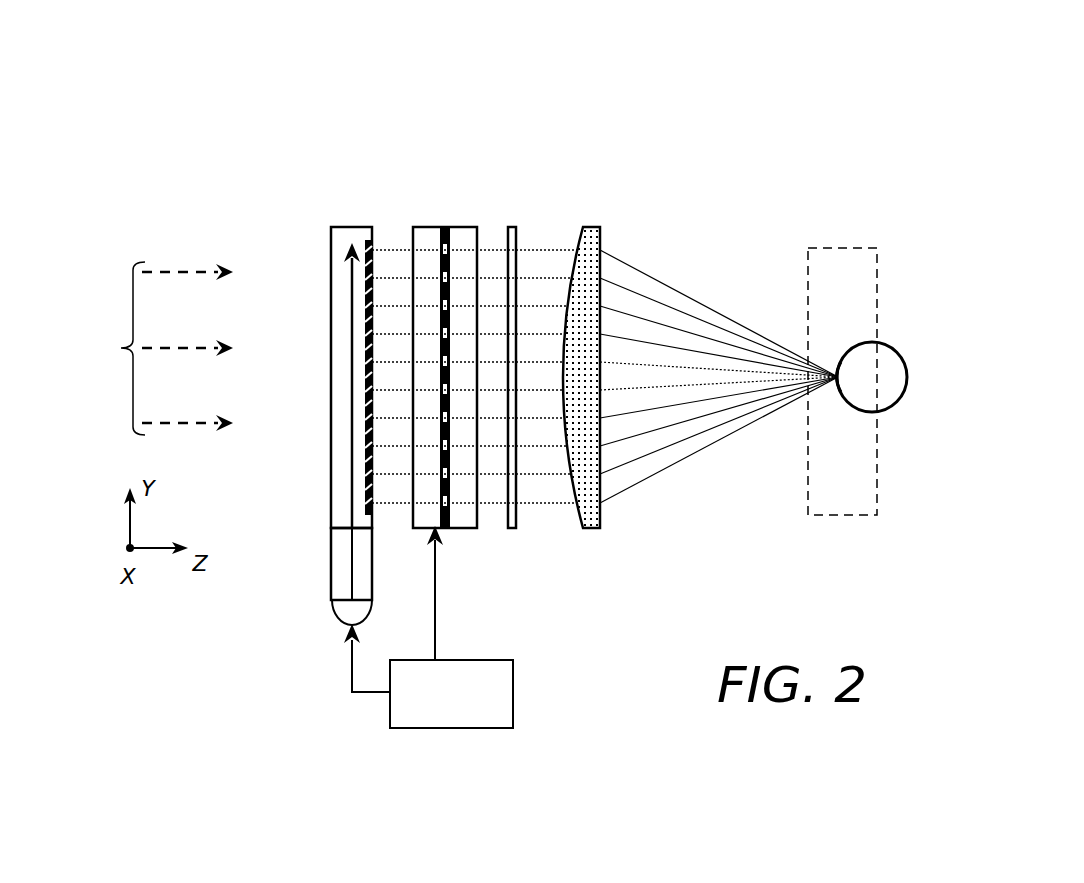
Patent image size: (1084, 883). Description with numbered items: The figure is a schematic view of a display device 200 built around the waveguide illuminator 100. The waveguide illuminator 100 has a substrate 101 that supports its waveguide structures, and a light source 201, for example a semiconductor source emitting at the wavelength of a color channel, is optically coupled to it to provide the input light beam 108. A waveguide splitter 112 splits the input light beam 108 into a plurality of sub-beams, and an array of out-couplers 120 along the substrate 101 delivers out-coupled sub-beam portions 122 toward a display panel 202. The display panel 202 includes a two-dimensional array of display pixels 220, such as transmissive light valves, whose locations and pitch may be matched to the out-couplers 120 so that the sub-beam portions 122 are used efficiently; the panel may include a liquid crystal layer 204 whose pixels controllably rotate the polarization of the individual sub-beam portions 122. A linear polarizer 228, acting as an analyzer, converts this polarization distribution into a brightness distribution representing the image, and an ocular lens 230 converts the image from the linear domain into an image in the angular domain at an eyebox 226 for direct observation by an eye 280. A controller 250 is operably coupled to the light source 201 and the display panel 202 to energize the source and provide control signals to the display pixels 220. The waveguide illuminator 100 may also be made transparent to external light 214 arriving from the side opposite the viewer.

The waveguide illuminator 100 is at (238, 210).
The substrate 101 is at (332, 478).
The input light beam 108 is at (352, 360).
The waveguide splitter 112 is at (333, 568).
The out-couplers 120 is at (366, 420).
The out-coupled sub-beam portions 122 is at (714, 355).
The display device 200 is at (568, 110).
The light source 201 is at (340, 612).
The display panel 202 is at (443, 326).
The liquid crystal layer 204 is at (452, 539).
The external light 214 is at (150, 348).
The display pixels 220 is at (451, 286).
The eyebox 226 is at (820, 456).
The linear polarizer 228 is at (513, 227).
The ocular lens 230 is at (593, 227).
The controller 250 is at (430, 708).
The eye 280 is at (886, 343).